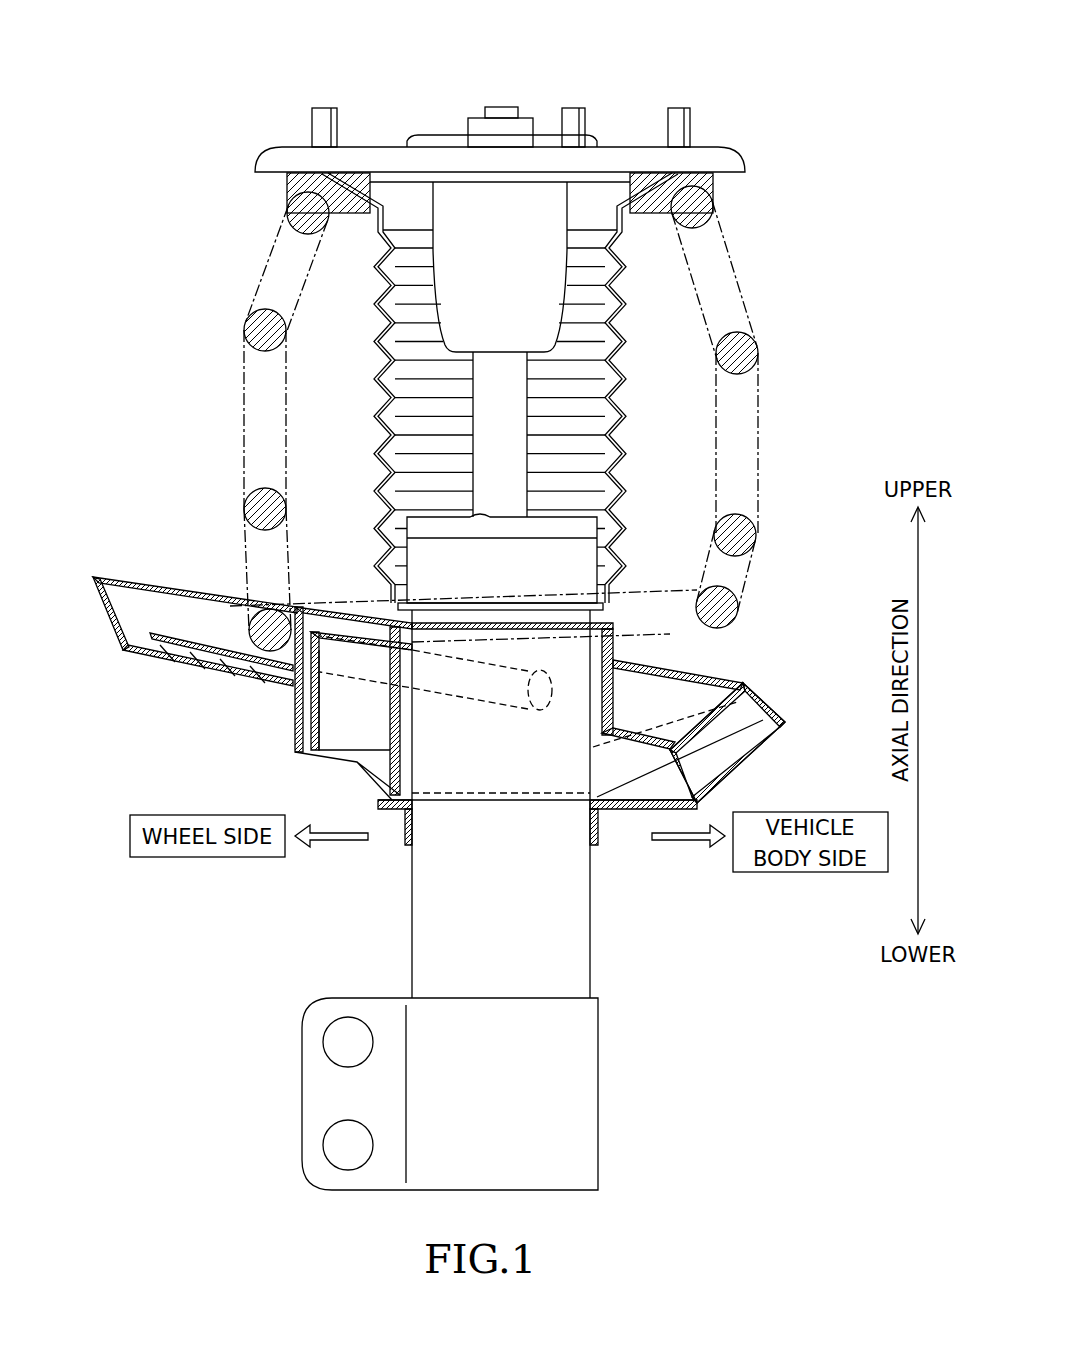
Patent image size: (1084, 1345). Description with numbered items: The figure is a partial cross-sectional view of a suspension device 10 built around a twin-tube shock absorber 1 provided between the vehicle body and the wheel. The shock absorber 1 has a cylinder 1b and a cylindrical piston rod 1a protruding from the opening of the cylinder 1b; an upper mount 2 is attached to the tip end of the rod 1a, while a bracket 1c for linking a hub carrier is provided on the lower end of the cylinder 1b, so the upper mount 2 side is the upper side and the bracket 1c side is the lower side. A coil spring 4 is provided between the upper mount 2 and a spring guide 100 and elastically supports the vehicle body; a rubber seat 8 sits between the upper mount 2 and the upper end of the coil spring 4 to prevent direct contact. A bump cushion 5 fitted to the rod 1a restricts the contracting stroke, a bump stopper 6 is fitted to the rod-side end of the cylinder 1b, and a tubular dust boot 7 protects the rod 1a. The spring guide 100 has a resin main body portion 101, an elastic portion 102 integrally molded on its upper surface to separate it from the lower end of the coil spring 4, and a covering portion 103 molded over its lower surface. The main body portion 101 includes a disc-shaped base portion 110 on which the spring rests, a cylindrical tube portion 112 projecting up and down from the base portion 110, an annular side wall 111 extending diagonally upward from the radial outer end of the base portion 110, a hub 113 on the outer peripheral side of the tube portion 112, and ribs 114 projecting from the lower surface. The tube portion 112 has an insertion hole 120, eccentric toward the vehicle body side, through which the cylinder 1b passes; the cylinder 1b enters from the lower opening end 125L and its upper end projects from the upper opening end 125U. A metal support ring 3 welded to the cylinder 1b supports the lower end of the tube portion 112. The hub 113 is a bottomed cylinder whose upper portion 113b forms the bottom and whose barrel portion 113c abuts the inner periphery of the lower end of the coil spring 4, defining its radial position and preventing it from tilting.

The suspension device 10 is at (233, 86).
The upper mount 2 is at (710, 165).
The rubber seat 8 is at (300, 183).
The dust boot 7 is at (383, 388).
The bump cushion 5 is at (435, 282).
The shock absorber 1 is at (417, 771).
The piston rod 1a is at (515, 425).
The cylinder 1b is at (535, 910).
The bracket 1c is at (302, 1025).
The bump stopper 6 is at (605, 522).
The upper opening end 125U is at (533, 625).
The coil spring 4 is at (745, 542).
The hub 113 is at (297, 660).
The upper portion 113b is at (355, 628).
The barrel portion 113c is at (258, 640).
The insertion hole 120 is at (357, 763).
The base portion 110 is at (168, 637).
The elastic portion 102 is at (188, 632).
The side wall 111 is at (118, 622).
The covering portion 103 is at (125, 650).
The main body portion 101 is at (170, 660).
The spring guide 100 is at (632, 713).
The tube portion 112 is at (613, 652).
The ribs 114 is at (735, 746).
The support ring 3 is at (598, 830).
The lower opening end 125L is at (480, 795).